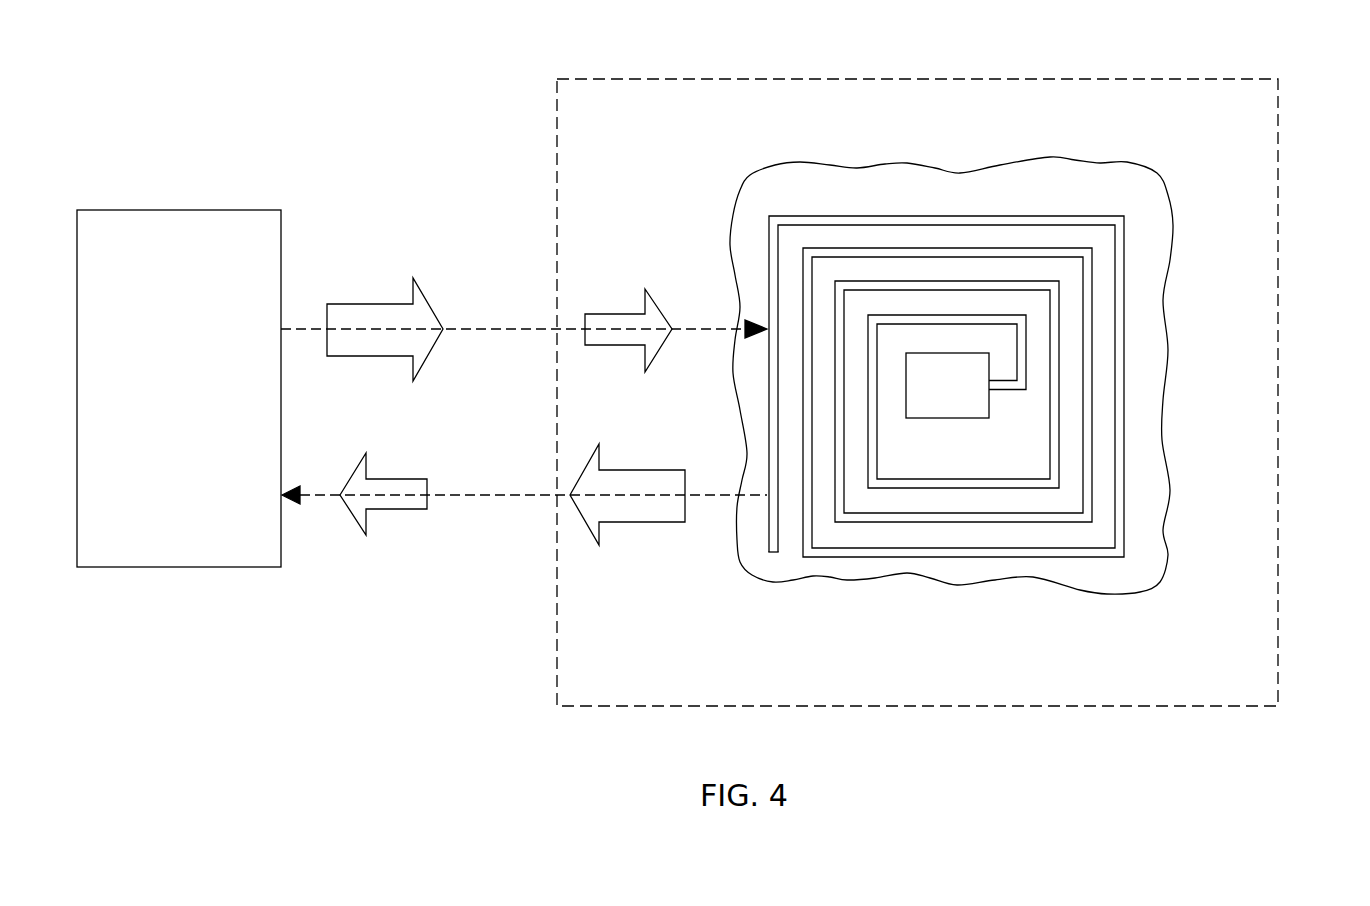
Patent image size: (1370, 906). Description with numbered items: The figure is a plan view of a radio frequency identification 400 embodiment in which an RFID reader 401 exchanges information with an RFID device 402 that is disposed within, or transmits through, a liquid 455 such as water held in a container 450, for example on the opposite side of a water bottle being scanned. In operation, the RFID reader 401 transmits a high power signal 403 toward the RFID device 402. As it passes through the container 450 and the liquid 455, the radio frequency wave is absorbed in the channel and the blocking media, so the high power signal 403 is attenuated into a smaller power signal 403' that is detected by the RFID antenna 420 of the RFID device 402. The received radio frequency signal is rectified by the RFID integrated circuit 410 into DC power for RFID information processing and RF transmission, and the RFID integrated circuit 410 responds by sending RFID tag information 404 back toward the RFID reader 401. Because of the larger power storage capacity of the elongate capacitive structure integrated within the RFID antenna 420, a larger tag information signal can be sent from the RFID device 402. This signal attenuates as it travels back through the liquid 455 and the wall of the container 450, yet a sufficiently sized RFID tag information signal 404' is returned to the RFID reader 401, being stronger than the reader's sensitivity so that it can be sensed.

The radio frequency identification 400 is at (272, 90).
The RFID reader 401 is at (191, 395).
The RFID device 402 is at (1107, 155).
The high power signal 403 is at (524, 299).
The smaller power signal 403' is at (572, 317).
The RFID tag information 404 is at (524, 488).
The RFID tag information signal 404' is at (383, 519).
The RFID integrated circuit 410 is at (969, 398).
The RFID antenna 420 is at (1124, 483).
The container 450 is at (1130, 706).
The liquid 455 is at (1246, 589).